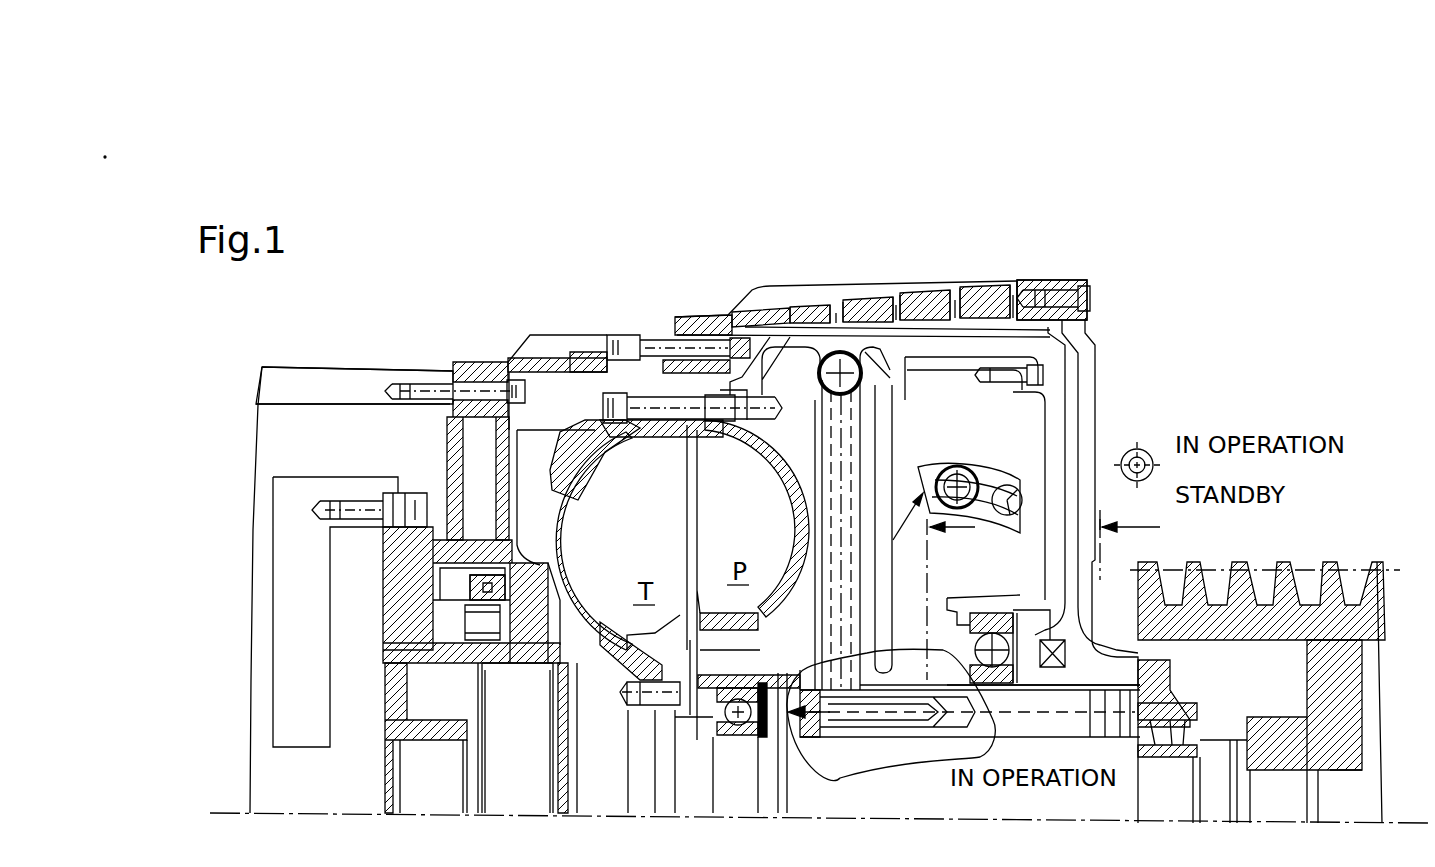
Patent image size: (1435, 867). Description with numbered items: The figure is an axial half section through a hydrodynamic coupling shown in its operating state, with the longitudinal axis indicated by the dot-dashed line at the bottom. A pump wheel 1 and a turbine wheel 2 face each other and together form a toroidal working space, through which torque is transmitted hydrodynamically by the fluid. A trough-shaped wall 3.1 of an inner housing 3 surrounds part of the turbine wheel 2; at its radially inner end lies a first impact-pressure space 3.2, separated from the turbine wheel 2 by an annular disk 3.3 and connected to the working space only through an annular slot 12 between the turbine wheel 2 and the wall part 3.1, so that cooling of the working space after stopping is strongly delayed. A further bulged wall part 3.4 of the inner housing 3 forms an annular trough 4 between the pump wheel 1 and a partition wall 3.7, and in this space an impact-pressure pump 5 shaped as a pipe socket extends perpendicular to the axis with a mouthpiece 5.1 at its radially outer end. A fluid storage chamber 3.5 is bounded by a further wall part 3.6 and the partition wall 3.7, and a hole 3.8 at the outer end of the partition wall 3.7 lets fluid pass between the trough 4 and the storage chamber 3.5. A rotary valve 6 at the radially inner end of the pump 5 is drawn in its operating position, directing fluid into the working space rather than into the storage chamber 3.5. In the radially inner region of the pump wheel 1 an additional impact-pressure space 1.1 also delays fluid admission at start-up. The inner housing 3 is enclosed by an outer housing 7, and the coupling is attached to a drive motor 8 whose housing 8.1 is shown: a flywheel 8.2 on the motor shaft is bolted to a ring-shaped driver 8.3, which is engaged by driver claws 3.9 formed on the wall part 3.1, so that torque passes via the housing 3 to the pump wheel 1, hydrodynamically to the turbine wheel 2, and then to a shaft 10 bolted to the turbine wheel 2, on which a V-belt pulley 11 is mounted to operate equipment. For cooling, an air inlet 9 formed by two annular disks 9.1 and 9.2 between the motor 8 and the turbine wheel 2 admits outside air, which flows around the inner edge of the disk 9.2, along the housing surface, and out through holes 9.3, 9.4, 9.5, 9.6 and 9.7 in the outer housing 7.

The pump wheel 1 is at (749, 530).
The additional impact-pressure space 1.1 is at (742, 659).
The turbine wheel 2 is at (650, 530).
The inner housing 3 is at (571, 408).
The trough-shaped wall 3.1 is at (573, 455).
The first impact-pressure space 3.2 is at (538, 713).
The annular disk 3.3 is at (553, 720).
The wall part 3.4 is at (820, 338).
The fluid storage chamber 3.5 is at (947, 450).
The further wall part 3.6 is at (1043, 432).
The partition wall 3.7 is at (883, 582).
The hole 3.8 is at (868, 370).
The driver claws 3.9 is at (478, 665).
The annular trough 4 is at (806, 455).
The impact-pressure pump 5 is at (850, 465).
The mouthpiece 5.1 is at (852, 347).
The rotary valve 6 is at (887, 722).
The outer housing 7 is at (696, 303).
The drive motor 8 is at (316, 350).
The drive motor housing 8.1 is at (348, 380).
The flywheel 8.2 is at (292, 573).
The ring-shaped driver 8.3 is at (383, 610).
The air inlet 9 is at (467, 345).
The annular disk 9.1 is at (455, 437).
The annular disk 9.2 is at (496, 467).
The hole 9.3 is at (777, 323).
The hole 9.4 is at (840, 300).
The hole 9.5 is at (900, 297).
The hole 9.6 is at (957, 290).
The hole 9.7 is at (1010, 293).
The shaft 10 is at (938, 793).
The V-belt pulley 11 is at (1277, 612).
The annular slot 12 is at (572, 530).